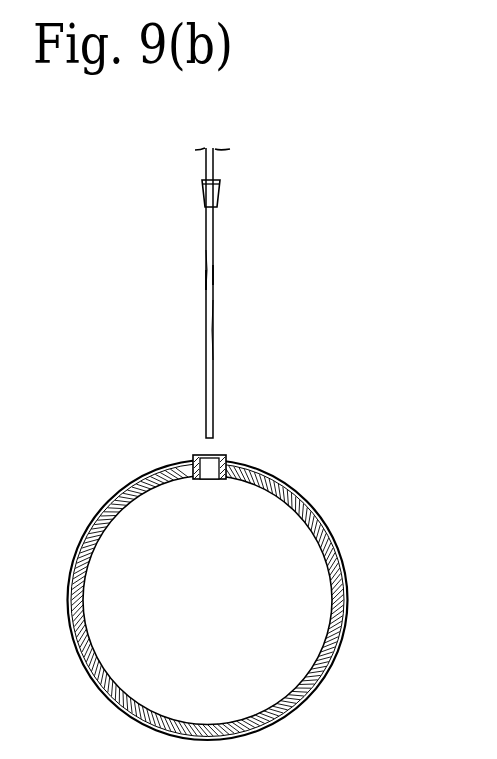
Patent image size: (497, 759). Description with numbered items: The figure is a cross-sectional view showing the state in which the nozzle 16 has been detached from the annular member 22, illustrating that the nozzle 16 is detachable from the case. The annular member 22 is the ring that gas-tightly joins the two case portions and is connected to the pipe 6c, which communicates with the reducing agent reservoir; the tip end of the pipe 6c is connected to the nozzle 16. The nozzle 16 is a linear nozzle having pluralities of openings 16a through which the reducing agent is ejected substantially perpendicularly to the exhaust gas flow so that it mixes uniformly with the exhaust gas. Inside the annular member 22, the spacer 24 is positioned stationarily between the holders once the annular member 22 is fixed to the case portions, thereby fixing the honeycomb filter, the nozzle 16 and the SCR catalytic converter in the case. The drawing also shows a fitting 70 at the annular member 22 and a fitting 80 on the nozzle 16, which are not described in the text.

The pipe 6c is at (205, 161).
The nozzle 16 is at (206, 283).
The openings 16a is at (213, 277).
The annular member 22 is at (349, 590).
The spacer 24 is at (313, 686).
The connector 70 is at (233, 451).
The ferrule 80 is at (225, 189).